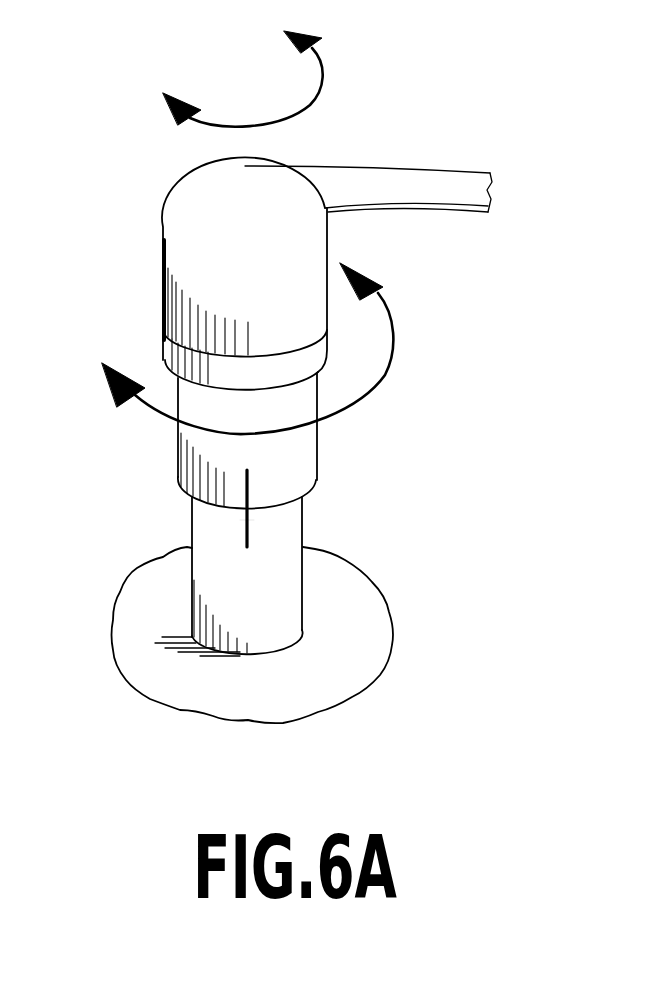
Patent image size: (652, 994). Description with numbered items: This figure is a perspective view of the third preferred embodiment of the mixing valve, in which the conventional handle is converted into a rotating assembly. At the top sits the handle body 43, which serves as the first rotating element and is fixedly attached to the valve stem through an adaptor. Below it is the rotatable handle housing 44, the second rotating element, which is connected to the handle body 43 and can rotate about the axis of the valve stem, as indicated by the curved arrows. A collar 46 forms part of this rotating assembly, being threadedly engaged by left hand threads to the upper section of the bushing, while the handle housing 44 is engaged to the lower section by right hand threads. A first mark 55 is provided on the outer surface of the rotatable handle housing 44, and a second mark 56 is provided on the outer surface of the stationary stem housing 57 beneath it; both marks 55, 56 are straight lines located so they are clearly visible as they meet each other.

The handle body 43 is at (328, 242).
The collar 46 is at (328, 347).
The rotatable handle housing 44 is at (317, 437).
The first mark 55 is at (248, 487).
The second mark 56 is at (248, 522).
The stationary stem housing 57 is at (302, 593).